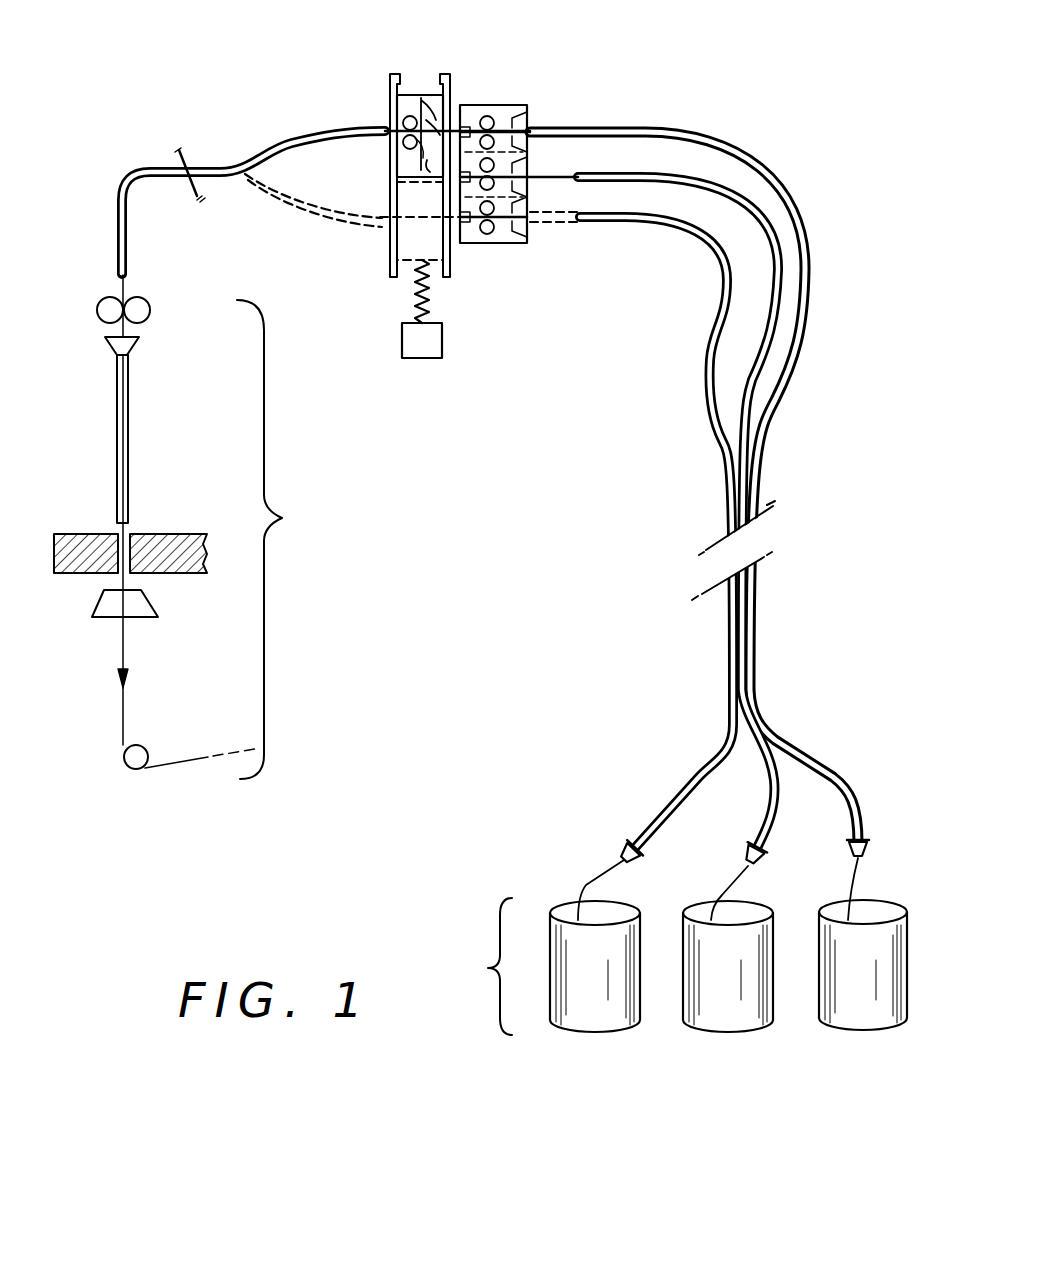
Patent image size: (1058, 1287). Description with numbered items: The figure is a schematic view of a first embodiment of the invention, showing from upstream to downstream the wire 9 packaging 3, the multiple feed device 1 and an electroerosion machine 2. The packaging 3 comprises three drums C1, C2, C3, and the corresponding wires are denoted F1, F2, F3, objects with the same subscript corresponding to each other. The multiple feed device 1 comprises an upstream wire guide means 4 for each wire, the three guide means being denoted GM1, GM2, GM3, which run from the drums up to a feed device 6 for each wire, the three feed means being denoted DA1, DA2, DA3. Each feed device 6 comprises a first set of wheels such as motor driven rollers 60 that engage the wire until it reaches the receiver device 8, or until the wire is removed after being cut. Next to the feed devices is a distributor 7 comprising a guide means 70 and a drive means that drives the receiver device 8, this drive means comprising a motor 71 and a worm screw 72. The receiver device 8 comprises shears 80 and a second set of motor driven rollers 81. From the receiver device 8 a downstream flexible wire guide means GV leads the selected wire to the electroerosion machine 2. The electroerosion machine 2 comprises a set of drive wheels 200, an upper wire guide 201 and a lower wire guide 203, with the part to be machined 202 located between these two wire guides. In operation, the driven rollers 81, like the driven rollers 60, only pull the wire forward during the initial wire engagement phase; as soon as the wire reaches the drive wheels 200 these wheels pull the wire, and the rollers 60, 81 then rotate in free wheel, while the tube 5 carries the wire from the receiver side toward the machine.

The multiple feed device 1 is at (472, 385).
The electroerosion machine 2 is at (207, 527).
The wire packaging 3 is at (484, 966).
The upstream wire guide means 4 is at (726, 630).
The feed tube 5 is at (127, 212).
The feed device 6 is at (515, 243).
The distributor 7 is at (392, 272).
The receiver device 8 is at (403, 107).
The wire 9 is at (588, 884).
The motor driven rollers 60 is at (487, 113).
The guide means 70 is at (390, 250).
The motor 71 is at (408, 340).
The worm screw 72 is at (416, 290).
The shears 80 is at (413, 100).
The driven rollers 81 is at (412, 153).
The drive wheels 200 is at (150, 309).
The upper wire guide 201 is at (130, 422).
The part to be machined 202 is at (180, 536).
The lower wire guide 203 is at (200, 592).
The downstream flexible wire guide means GV is at (222, 168).
The first upstream wire guide means GM1 is at (688, 837).
The second upstream wire guide means GM2 is at (720, 193).
The third upstream wire guide means GM3 is at (648, 124).
The first feed device DA1 is at (490, 243).
The second feed device DA2 is at (530, 178).
The third feed device DA3 is at (512, 105).
The first wire F1 is at (611, 872).
The second wire F2 is at (740, 885).
The third wire F3 is at (860, 873).
The first drum C1 is at (587, 1007).
The second drum C2 is at (717, 1007).
The third drum C3 is at (852, 1007).